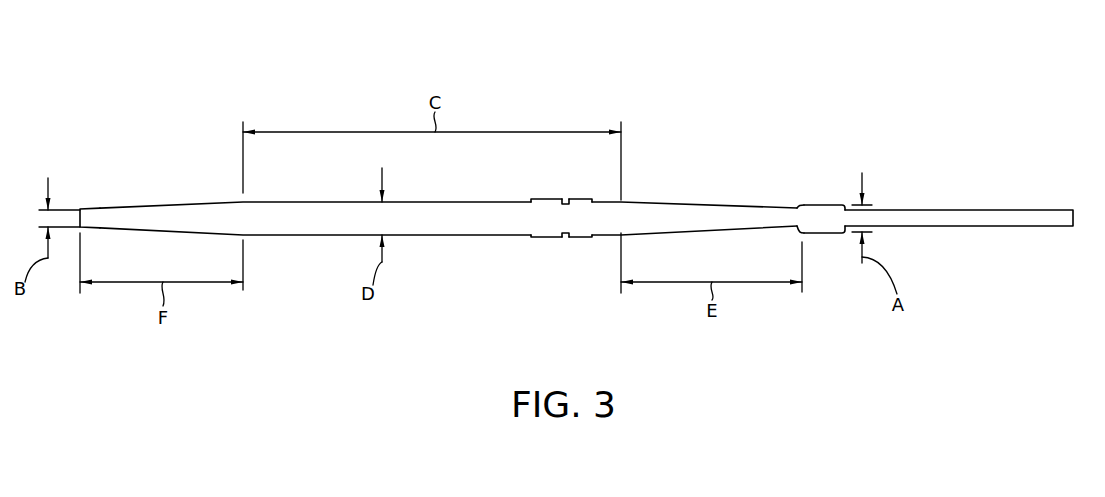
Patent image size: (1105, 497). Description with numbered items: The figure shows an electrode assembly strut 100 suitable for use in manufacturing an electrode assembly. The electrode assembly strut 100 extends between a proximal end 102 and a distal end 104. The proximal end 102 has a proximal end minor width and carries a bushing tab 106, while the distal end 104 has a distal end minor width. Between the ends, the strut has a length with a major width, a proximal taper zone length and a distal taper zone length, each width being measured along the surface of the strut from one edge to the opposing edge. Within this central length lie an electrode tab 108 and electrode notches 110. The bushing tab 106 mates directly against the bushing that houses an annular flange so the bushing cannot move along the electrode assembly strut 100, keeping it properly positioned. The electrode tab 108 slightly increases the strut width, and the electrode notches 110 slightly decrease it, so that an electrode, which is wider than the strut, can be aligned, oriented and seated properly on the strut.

The electrode assembly strut 100 is at (253, 72).
The proximal end 102 is at (793, 201).
The distal end 104 is at (82, 205).
The bushing tab 106 is at (823, 205).
The electrode tab 108 is at (548, 198).
The electrode notches 110 is at (566, 203).